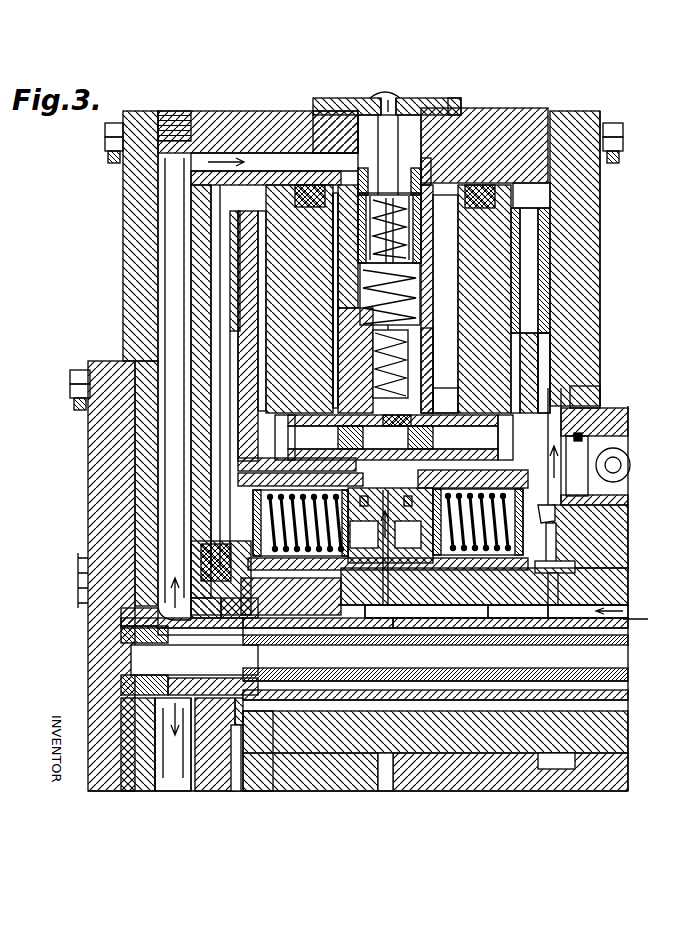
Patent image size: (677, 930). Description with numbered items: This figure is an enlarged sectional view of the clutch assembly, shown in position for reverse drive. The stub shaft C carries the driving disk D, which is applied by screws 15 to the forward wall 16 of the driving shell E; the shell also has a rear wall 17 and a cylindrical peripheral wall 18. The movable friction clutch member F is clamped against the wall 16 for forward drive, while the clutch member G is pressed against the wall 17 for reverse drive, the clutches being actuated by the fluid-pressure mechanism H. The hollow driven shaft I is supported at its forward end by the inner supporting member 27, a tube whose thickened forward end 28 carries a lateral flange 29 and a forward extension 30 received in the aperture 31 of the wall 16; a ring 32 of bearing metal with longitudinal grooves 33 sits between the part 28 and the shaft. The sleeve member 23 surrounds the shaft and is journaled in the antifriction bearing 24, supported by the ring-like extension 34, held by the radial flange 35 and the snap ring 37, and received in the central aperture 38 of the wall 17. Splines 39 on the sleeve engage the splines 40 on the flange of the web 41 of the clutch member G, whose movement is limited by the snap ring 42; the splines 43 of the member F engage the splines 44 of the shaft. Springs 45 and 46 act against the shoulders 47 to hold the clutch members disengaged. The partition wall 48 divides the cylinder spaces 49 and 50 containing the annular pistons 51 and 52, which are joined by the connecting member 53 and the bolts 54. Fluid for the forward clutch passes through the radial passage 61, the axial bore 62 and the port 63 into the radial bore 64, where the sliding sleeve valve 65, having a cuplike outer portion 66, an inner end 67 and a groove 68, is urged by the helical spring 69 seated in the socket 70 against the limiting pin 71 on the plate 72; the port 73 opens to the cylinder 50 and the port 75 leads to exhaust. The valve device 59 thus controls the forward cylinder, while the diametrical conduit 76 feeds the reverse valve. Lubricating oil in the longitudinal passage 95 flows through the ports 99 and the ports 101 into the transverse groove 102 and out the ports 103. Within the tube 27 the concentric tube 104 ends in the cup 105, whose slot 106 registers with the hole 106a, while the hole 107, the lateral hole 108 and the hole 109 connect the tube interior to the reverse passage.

The screws 15 is at (62, 378).
The forward wall 16 is at (128, 302).
The rear wall 17 is at (574, 295).
The cylindrical peripheral wall 18 is at (489, 108).
The sleeve member 23 is at (600, 528).
The antifriction bearing 24 is at (622, 460).
The inner supporting member 27 is at (432, 620).
The thickened forward end 28 is at (298, 612).
The lateral flange 29 is at (226, 770).
The forward extension 30 is at (194, 660).
The aperture 31 is at (113, 606).
The ring of bearing metal 32 is at (252, 745).
The longitudinal grooves 33 is at (330, 622).
The ring-like extension 34 is at (614, 400).
The radial flange 35 is at (600, 493).
The snap ring 37 is at (581, 428).
The central aperture 38 is at (580, 378).
The longitudinal splines 39 is at (408, 534).
The splines 40 is at (548, 506).
The web 41 is at (532, 342).
The snap ring 42 is at (375, 490).
The splines 43 is at (246, 490).
The longitudinal splines 44 is at (246, 502).
The spring 45 is at (240, 518).
The spring 46 is at (462, 486).
The shoulders 47 is at (398, 490).
The partition wall 48 is at (416, 340).
The cylinder space 49 is at (446, 386).
The cylinder space 50 is at (335, 204).
The annular piston 51 is at (465, 320).
The annular piston 52 is at (300, 310).
The connecting member 53 is at (400, 437).
The bolts 54 is at (300, 438).
The valve device 59 is at (421, 86).
The radial passage 61 is at (160, 326).
The axial bore 62 is at (200, 150).
The port 63 is at (356, 150).
The radial bore 64 is at (437, 102).
The sliding sleeve valve 65 is at (414, 196).
The cuplike outer portion 66 is at (414, 166).
The inner end 67 is at (404, 262).
The groove 68 is at (366, 240).
The helical spring 69 is at (396, 306).
The socket 70 is at (366, 360).
The limiting pin 71 is at (378, 96).
The plate 72 is at (360, 98).
The port 73 is at (389, 155).
The port 75 is at (366, 256).
The diametrical conduit 76 is at (158, 783).
The longitudinal passage 95 is at (482, 612).
The ports 99 is at (388, 604).
The ports 101 is at (556, 604).
The transverse groove 102 is at (520, 612).
The ports 103 is at (549, 540).
The concentric tube 104 is at (612, 668).
The cup 105 is at (113, 683).
The slot 106 is at (185, 627).
The hole 106a is at (113, 628).
The hole 107 is at (182, 690).
The lateral hole 108 is at (130, 706).
The hole 109 is at (173, 744).
The stub shaft C is at (70, 546).
The driving disk D is at (88, 460).
The driving shell E is at (262, 108).
The movable friction clutch member F is at (240, 273).
The movable friction clutch member G is at (522, 270).
The fluid-pressure mechanism H is at (464, 240).
The driven shaft I is at (606, 575).